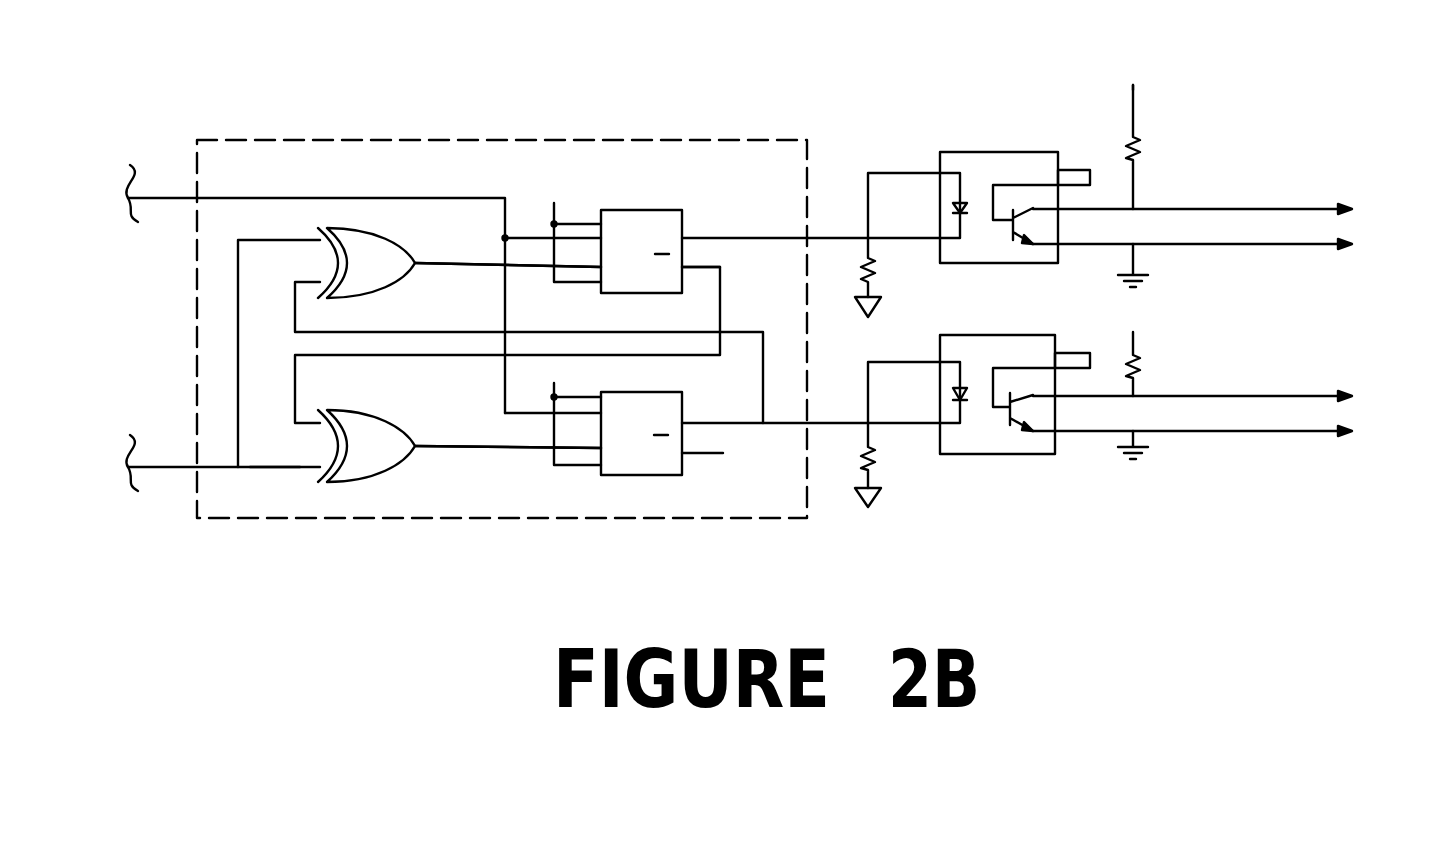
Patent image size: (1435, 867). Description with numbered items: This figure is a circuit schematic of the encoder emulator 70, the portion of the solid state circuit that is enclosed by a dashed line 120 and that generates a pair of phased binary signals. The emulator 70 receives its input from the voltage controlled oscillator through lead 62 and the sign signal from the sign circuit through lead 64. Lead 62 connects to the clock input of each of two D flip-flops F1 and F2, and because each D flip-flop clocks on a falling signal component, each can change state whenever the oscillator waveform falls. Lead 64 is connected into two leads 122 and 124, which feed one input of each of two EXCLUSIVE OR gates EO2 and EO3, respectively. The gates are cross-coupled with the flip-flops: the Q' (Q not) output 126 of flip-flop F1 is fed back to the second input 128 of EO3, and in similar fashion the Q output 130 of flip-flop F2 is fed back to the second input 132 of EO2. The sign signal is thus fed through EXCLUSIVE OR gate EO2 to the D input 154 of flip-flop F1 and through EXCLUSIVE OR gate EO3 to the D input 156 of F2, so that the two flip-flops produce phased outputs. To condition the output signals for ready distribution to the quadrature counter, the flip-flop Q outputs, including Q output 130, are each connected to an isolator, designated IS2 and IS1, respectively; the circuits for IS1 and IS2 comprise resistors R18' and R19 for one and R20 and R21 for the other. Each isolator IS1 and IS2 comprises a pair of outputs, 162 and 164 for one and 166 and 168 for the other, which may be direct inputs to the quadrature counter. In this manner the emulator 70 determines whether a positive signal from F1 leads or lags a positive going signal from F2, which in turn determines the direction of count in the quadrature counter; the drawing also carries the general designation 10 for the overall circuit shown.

The isolated output stage 10 is at (1142, 505).
The lead 62 is at (172, 198).
The lead 64 is at (172, 468).
The encoder emulator 70 is at (658, 126).
The dashed line 120 is at (807, 163).
The lead 122 is at (263, 240).
The lead 124 is at (272, 470).
The Q' output 126 is at (703, 267).
The second input 128 is at (303, 447).
The Q output 130 is at (743, 423).
The second input 132 is at (320, 282).
The D input 154 is at (480, 267).
The D input 156 is at (483, 452).
The output 162 is at (1267, 210).
The output 164 is at (1265, 247).
The output 166 is at (1280, 395).
The output 168 is at (1260, 433).
The EXCLUSIVE OR gate EO2 is at (358, 234).
The EXCLUSIVE OR gate EO3 is at (357, 482).
The D flip-flop F1 is at (633, 210).
The D flip-flop F2 is at (660, 475).
The isolator IS1 is at (983, 152).
The isolator IS2 is at (1017, 455).
The resistor R18' is at (1195, 167).
The resistor R19 is at (880, 265).
The resistor R20 is at (1147, 368).
The resistor R21 is at (880, 457).